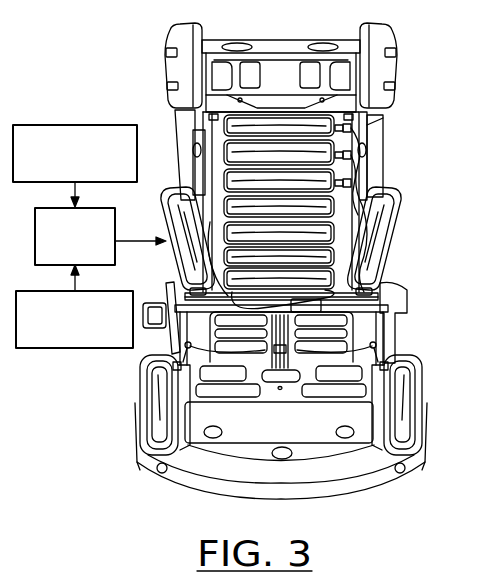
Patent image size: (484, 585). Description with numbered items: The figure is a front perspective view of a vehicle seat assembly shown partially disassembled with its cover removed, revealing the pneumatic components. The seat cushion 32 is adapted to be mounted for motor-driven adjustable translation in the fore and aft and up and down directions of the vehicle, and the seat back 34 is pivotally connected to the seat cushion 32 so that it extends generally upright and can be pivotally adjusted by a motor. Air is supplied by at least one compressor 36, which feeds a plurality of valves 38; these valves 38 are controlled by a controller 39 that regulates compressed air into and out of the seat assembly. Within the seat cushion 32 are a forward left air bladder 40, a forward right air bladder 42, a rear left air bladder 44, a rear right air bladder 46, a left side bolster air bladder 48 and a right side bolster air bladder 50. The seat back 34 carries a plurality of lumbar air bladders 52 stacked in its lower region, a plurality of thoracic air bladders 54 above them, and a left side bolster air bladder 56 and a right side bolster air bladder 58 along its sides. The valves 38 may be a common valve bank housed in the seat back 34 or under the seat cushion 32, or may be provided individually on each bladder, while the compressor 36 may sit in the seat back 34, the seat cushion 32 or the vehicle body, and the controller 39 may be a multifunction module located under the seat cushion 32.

The seat cushion 32 is at (137, 463).
The seat back 34 is at (384, 148).
The compressor 36 is at (75, 153).
The valves 38 is at (75, 236).
The controller 39 is at (74, 319).
The forward left air bladder 40 is at (330, 390).
The forward right air bladder 42 is at (232, 390).
The rear left air bladder 44 is at (333, 332).
The rear right air bladder 46 is at (222, 331).
The left side bolster air bladder 48 is at (408, 432).
The right side bolster air bladder 50 is at (150, 432).
The lumbar air bladders 52 is at (313, 257).
The thoracic air bladders 54 is at (253, 153).
The left side bolster air bladder 56 is at (368, 238).
The right side bolster air bladder 58 is at (190, 232).